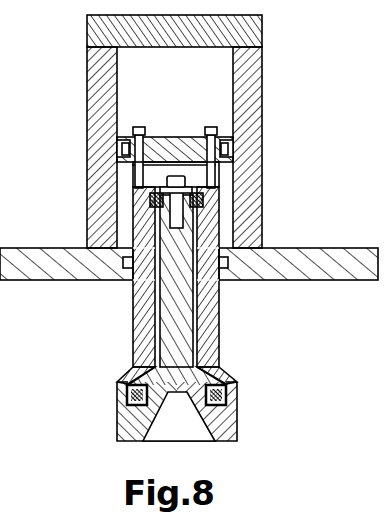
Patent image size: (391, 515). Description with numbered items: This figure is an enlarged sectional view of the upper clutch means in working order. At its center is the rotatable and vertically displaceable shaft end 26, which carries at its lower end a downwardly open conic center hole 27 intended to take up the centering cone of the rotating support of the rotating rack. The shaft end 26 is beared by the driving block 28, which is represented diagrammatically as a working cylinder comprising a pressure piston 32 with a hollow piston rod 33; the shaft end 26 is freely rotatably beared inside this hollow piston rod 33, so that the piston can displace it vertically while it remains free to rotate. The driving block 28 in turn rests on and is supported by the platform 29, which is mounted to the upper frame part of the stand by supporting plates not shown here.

The shaft end 26 is at (176, 313).
The conic center hole 27 is at (163, 432).
The driving block 28 is at (264, 116).
The platform 29 is at (312, 260).
The pressure piston 32 is at (172, 128).
The hollow piston rod 33 is at (137, 307).